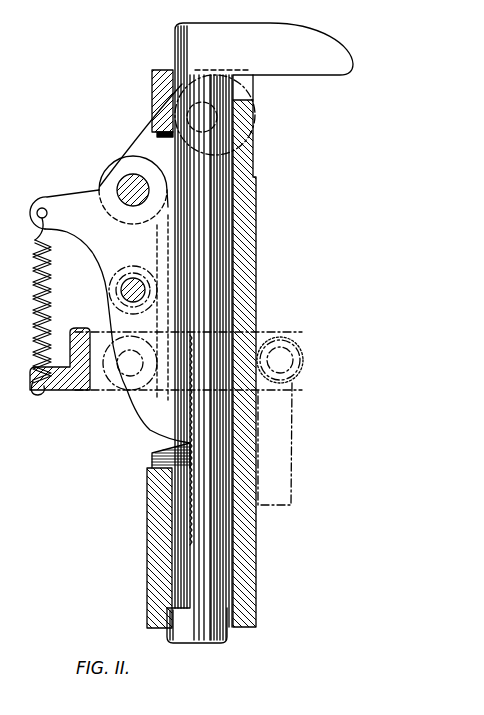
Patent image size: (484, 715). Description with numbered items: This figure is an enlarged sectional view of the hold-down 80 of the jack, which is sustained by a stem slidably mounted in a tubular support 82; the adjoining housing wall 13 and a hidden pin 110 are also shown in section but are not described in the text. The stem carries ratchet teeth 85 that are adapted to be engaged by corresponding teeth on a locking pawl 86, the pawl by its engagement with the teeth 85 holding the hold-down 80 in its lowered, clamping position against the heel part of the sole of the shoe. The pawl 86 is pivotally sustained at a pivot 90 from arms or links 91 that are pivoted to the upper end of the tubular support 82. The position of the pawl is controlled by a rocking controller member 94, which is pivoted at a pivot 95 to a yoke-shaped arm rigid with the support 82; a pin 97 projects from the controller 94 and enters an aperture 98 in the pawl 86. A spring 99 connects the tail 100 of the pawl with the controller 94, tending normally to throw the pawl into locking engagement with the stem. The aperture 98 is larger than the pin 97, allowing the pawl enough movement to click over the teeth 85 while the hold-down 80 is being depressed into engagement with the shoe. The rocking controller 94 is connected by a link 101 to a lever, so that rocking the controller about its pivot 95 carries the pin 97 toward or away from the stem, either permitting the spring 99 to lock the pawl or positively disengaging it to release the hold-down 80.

The hold-down 80 is at (311, 50).
The tubular support 82 is at (232, 598).
The housing wall 13 is at (258, 206).
The hidden pin 110 is at (253, 118).
The arms or links 91 is at (139, 132).
The tail 100 is at (61, 207).
The pivot 90 is at (131, 175).
The locking pawl 86 is at (147, 414).
The ratchet teeth 85 is at (190, 494).
The spring 99 is at (52, 288).
The pin 97 is at (120, 291).
The aperture 98 is at (166, 288).
The rocking controller member 94 is at (88, 391).
The pivot 95 is at (118, 389).
The link 101 is at (293, 450).